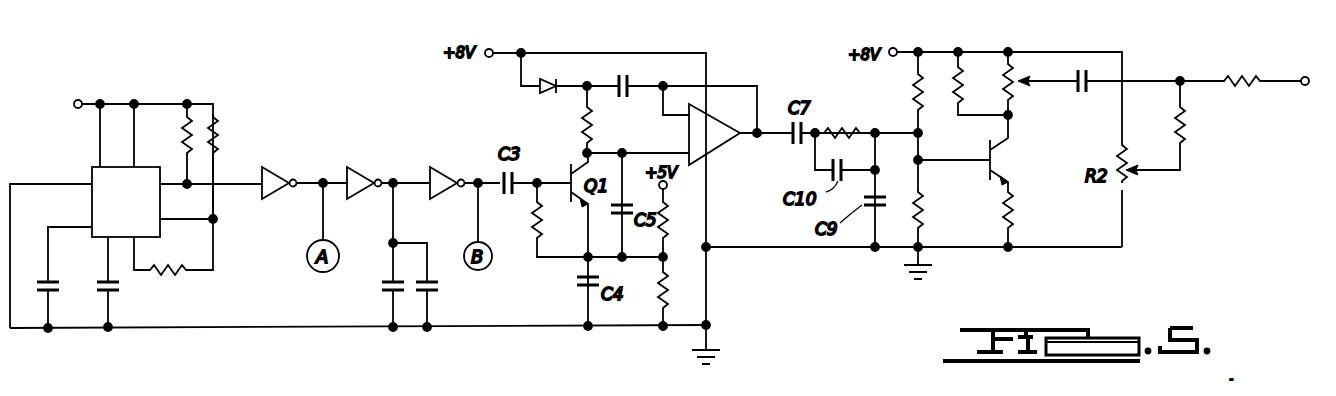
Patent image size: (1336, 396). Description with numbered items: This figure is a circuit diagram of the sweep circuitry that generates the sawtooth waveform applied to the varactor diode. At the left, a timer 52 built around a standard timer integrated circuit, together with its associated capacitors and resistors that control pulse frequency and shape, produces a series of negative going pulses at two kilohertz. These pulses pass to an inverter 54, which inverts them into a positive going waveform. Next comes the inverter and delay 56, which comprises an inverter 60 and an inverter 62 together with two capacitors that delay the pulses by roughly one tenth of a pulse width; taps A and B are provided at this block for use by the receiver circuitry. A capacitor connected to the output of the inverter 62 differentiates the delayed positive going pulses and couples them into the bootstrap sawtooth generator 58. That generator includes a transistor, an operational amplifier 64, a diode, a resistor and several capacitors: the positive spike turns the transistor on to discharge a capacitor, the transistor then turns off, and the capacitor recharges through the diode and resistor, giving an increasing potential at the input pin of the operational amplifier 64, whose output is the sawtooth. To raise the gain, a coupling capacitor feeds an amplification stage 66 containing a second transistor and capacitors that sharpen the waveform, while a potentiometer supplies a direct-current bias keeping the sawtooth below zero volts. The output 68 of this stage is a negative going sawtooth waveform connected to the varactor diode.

The timer 52 is at (46, 163).
The inverter 54 is at (276, 172).
The inverter and delay 56 is at (406, 154).
The bootstrap sawtooth generator 58 is at (657, 47).
The inverter 60 is at (363, 170).
The inverter 62 is at (450, 170).
The operational amplifier 64 is at (745, 141).
The amplification stage 66 is at (1014, 36).
The output of the amplifier stage 68 is at (1305, 86).